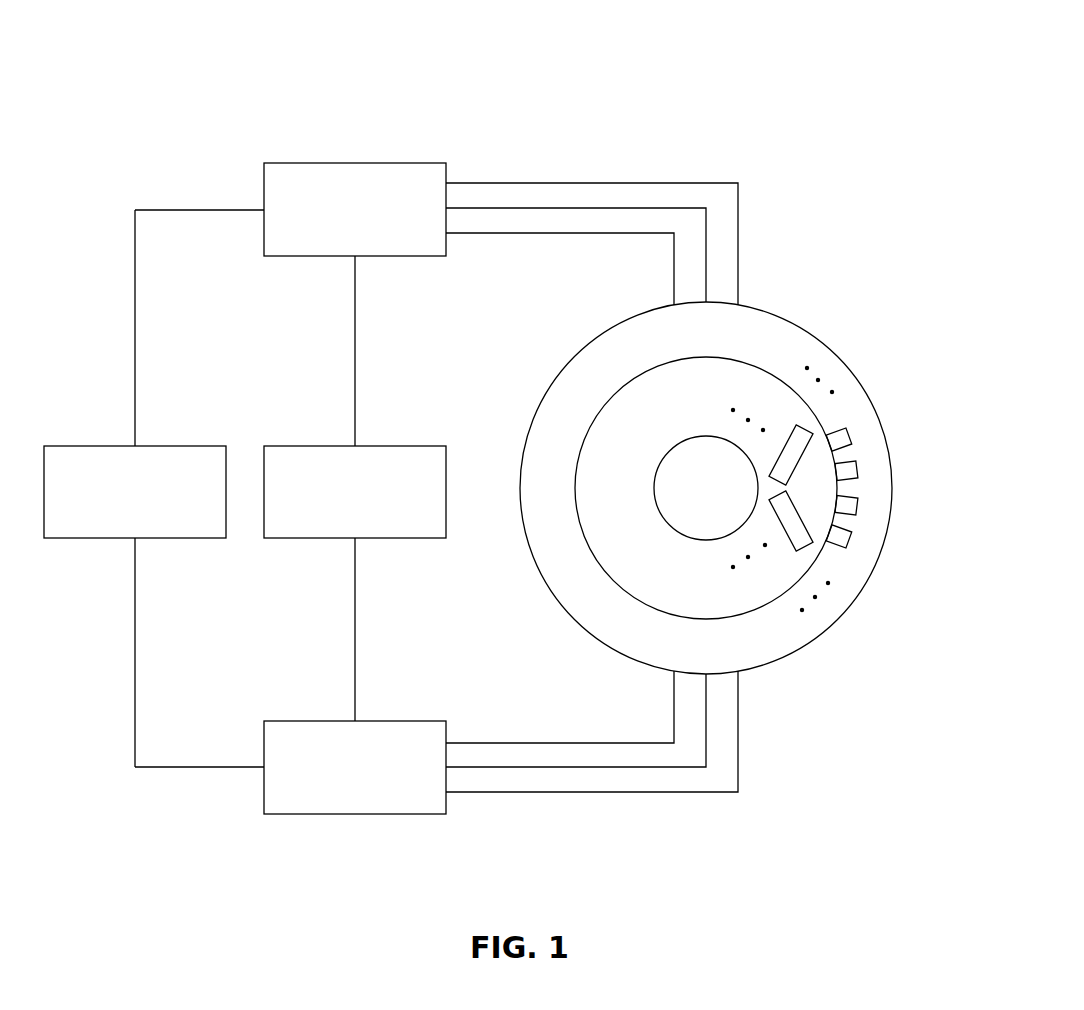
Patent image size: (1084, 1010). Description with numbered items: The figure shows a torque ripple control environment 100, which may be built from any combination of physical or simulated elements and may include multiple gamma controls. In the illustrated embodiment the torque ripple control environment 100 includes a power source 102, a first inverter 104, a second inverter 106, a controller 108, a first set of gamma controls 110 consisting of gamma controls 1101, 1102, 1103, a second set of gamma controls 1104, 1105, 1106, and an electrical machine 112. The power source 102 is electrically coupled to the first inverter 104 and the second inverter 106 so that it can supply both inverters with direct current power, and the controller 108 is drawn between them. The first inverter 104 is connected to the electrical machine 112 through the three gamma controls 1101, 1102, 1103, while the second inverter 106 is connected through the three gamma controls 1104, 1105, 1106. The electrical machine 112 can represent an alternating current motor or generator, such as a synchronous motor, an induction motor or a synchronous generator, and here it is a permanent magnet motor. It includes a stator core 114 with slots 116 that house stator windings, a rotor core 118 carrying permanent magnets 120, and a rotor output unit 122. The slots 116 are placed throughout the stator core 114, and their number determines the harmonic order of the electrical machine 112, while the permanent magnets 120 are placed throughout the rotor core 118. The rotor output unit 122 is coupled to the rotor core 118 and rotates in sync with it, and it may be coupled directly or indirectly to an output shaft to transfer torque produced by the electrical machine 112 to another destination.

The torque ripple control environment 100 is at (749, 35).
The power source 102 is at (157, 446).
The first inverter 104 is at (377, 163).
The second inverter 106 is at (377, 721).
The controller 108 is at (377, 446).
The gamma controls 110 is at (592, 496).
The gamma control 1101 is at (632, 232).
The gamma control 1102 is at (570, 207).
The gamma control 1103 is at (490, 182).
The gamma control 1104 is at (523, 744).
The gamma control 1105 is at (587, 768).
The gamma control 1106 is at (680, 793).
The electrical machine 112 is at (776, 294).
The stator core 114 is at (625, 323).
The slots 116 is at (876, 440).
The rotor core 118 is at (612, 398).
The permanent magnets 120 is at (783, 406).
The rotor output unit 122 is at (653, 493).